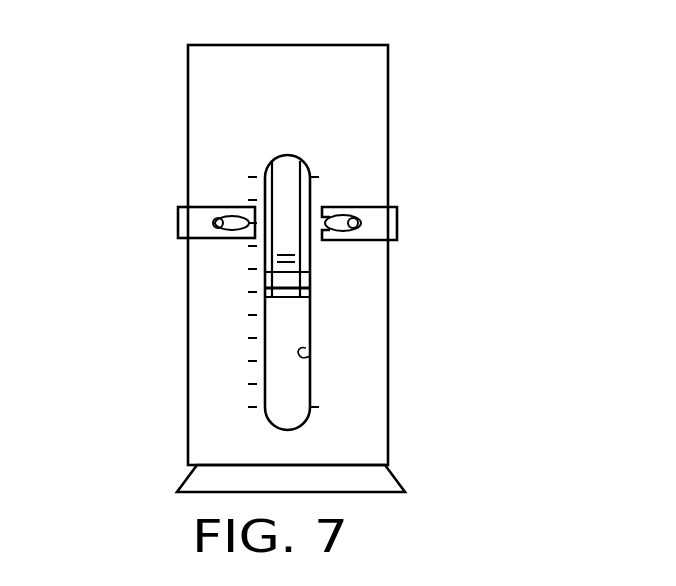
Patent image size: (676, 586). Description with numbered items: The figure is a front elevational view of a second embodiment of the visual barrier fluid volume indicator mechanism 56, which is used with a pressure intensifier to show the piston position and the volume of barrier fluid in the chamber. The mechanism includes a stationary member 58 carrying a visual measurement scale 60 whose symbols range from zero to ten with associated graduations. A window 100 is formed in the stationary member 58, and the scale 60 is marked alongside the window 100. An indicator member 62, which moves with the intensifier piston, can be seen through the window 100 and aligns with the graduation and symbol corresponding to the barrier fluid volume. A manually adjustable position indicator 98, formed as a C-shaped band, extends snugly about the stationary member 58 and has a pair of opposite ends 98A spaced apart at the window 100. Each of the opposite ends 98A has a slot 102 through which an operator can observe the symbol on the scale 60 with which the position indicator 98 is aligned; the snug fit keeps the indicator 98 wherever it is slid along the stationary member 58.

The visual barrier fluid volume indicator mechanism 56 is at (487, 44).
The stationary member 58 is at (390, 378).
The visual measurement scale 60 is at (220, 345).
The indicator member 62 is at (308, 288).
The manually adjustable position indicator 98 is at (148, 192).
The opposite ends 98A is at (352, 207).
The window 100 is at (310, 356).
The slot 102 is at (215, 226).